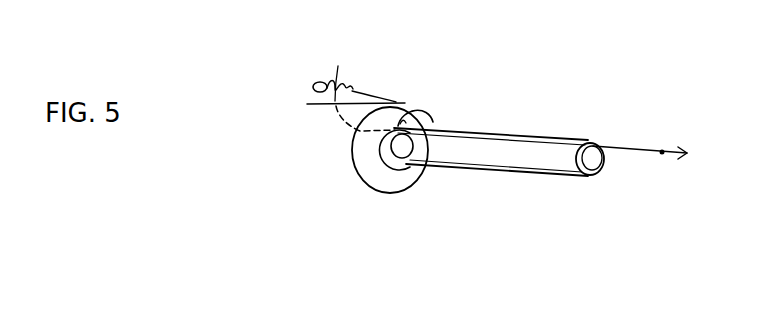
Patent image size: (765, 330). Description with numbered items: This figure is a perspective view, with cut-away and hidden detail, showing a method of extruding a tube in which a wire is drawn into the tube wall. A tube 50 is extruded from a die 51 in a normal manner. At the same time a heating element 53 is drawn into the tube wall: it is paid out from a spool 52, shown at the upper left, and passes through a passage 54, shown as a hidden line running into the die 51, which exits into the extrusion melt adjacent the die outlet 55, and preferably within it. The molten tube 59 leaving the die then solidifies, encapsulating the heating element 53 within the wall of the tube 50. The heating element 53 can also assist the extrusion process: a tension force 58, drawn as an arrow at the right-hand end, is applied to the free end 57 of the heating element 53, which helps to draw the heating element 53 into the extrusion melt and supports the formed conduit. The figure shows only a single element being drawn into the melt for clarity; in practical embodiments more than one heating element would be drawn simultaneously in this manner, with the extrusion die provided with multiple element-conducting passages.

The tube 50 is at (588, 139).
The die 51 is at (368, 181).
The spool 52 is at (340, 68).
The heating element 53 is at (356, 95).
The passage 54 is at (336, 116).
The die outlet 55 is at (430, 106).
The free end 57 is at (633, 152).
The tension force 58 is at (670, 154).
The molten tube 59 is at (440, 175).